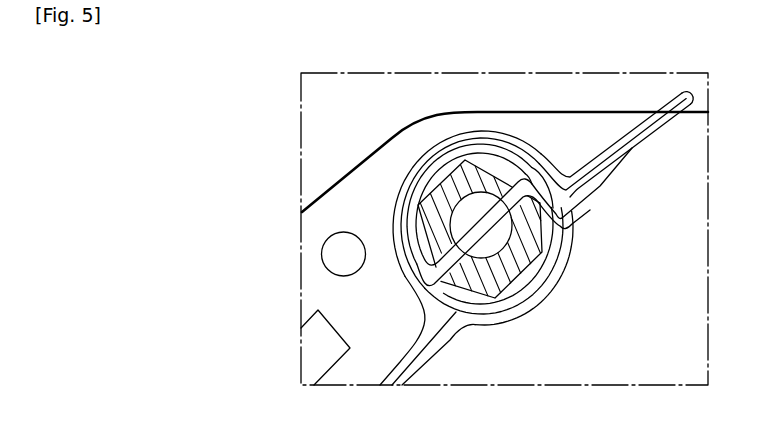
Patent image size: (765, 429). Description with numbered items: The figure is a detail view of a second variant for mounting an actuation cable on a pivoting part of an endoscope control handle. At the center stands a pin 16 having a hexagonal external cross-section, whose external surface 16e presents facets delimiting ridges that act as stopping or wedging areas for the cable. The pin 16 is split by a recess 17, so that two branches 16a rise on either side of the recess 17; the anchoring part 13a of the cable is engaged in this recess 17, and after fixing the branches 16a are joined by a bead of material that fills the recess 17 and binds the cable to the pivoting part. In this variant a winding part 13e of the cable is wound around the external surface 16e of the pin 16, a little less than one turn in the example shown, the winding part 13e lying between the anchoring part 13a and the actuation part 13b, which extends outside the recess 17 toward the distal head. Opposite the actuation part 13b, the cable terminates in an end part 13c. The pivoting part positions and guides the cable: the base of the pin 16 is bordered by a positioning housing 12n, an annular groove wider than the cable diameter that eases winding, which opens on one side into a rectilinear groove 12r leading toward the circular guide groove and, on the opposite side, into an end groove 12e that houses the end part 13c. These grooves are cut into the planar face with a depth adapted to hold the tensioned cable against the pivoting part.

The end groove 12e is at (598, 190).
The positioning housing 12n is at (394, 218).
The rectilinear groove 12r is at (400, 360).
The anchoring part 13a is at (463, 187).
The actuation part 13b is at (423, 357).
The end part 13c is at (633, 152).
The winding part 13e is at (485, 142).
The pin 16 is at (523, 282).
The branches 16a is at (437, 197).
The external surface 16e is at (469, 296).
The recess 17 is at (505, 195).